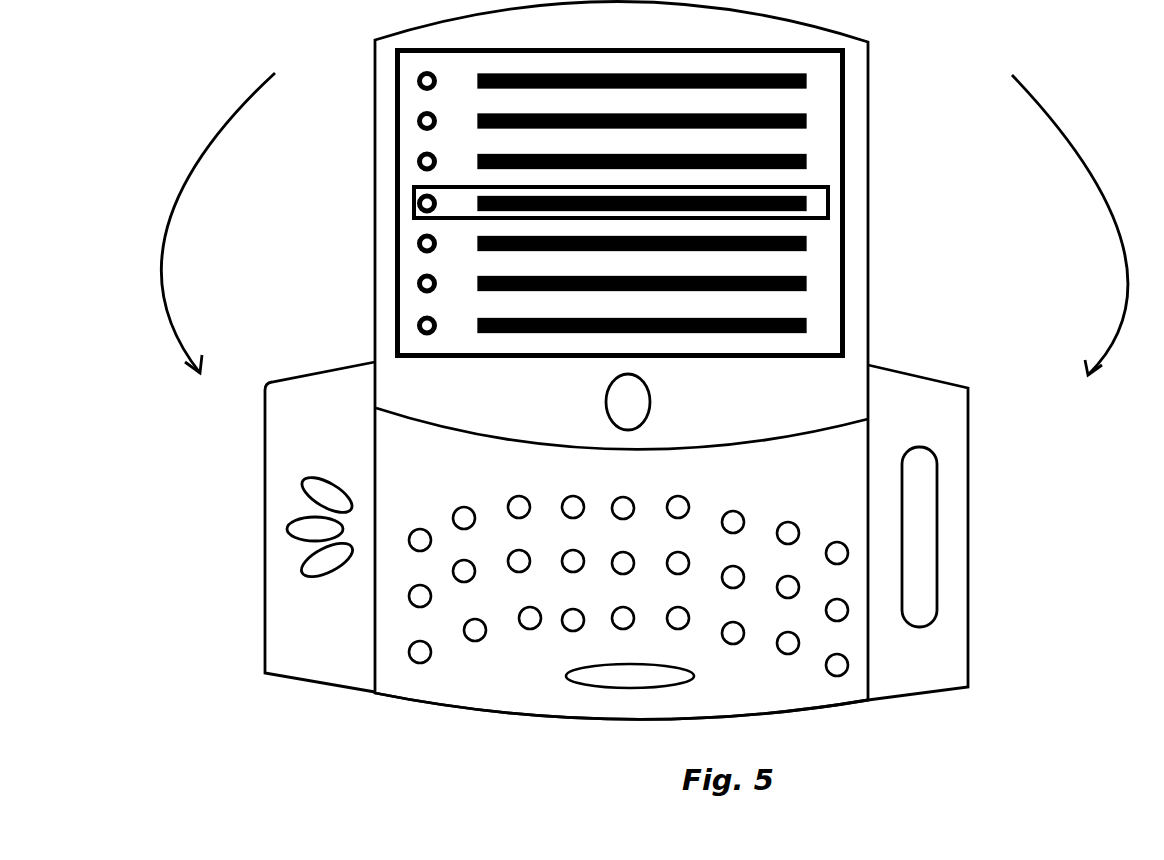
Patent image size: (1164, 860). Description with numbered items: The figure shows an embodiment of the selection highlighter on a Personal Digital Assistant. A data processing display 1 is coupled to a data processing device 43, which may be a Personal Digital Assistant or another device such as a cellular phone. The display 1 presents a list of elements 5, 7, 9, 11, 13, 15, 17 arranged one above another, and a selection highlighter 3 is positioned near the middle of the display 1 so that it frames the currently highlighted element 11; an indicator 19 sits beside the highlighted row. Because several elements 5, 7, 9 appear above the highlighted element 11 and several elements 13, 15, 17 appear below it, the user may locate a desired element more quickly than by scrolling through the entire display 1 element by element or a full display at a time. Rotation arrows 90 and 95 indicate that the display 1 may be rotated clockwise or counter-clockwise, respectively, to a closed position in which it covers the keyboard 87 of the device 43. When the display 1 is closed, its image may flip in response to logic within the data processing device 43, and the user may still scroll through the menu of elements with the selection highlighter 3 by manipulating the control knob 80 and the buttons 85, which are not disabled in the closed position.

The data processing display 1 is at (815, 174).
The selection highlighter 3 is at (830, 196).
The element 5 is at (806, 82).
The element 7 is at (806, 122).
The element 9 is at (806, 162).
The currently highlighted element 11 is at (806, 202).
The element 13 is at (806, 240).
The element 15 is at (806, 287).
The element 17 is at (806, 323).
The selection indicator 19 is at (418, 203).
The data processing device 43 is at (935, 420).
The control knob 80 is at (913, 532).
The buttons 85 is at (332, 497).
The keyboard 87 is at (793, 695).
The rotation arrow 90 is at (1072, 225).
The rotation arrow 95 is at (218, 223).